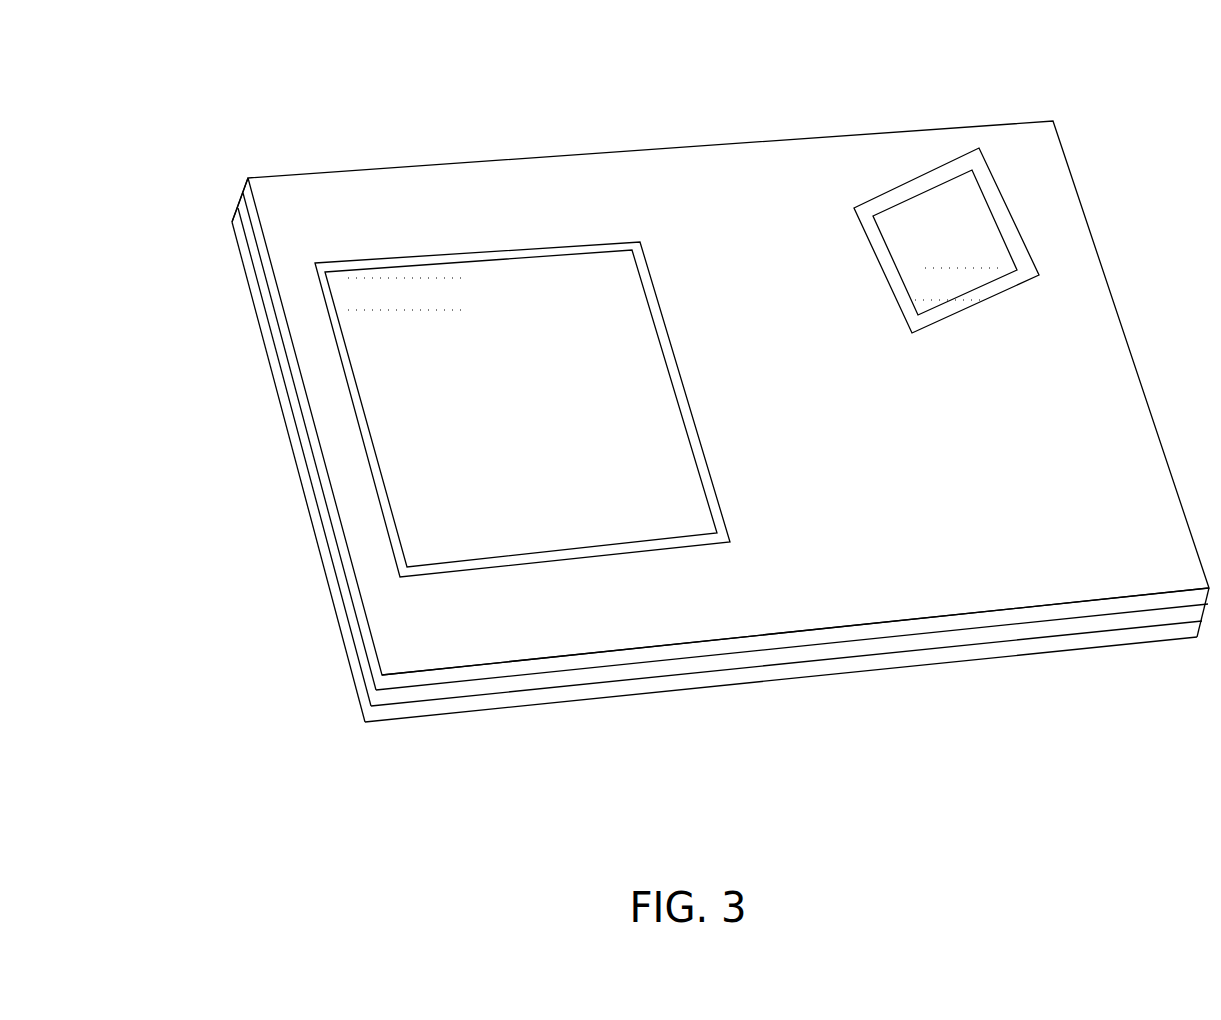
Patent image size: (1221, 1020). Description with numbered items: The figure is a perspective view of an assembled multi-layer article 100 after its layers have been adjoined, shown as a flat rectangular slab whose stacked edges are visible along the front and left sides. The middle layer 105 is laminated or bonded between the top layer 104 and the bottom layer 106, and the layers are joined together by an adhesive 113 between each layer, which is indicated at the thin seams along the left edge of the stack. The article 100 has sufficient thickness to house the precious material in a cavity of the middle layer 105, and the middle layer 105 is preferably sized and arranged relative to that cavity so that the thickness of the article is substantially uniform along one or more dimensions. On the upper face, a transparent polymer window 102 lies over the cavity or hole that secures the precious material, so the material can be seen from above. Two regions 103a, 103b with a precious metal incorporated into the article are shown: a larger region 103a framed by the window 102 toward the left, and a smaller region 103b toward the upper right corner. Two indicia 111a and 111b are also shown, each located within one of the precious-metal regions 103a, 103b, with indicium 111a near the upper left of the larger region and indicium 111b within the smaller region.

The article 100 is at (506, 124).
The transparent polymer window 102 is at (652, 272).
The region with precious metal 103a is at (490, 416).
The region with precious metal 103b is at (915, 254).
The top layer 104 is at (448, 675).
The middle layer 105 is at (605, 677).
The bottom layer 106 is at (830, 663).
The indicium 111a is at (382, 278).
The indicium 111b is at (950, 285).
The adhesive 113 is at (243, 230).